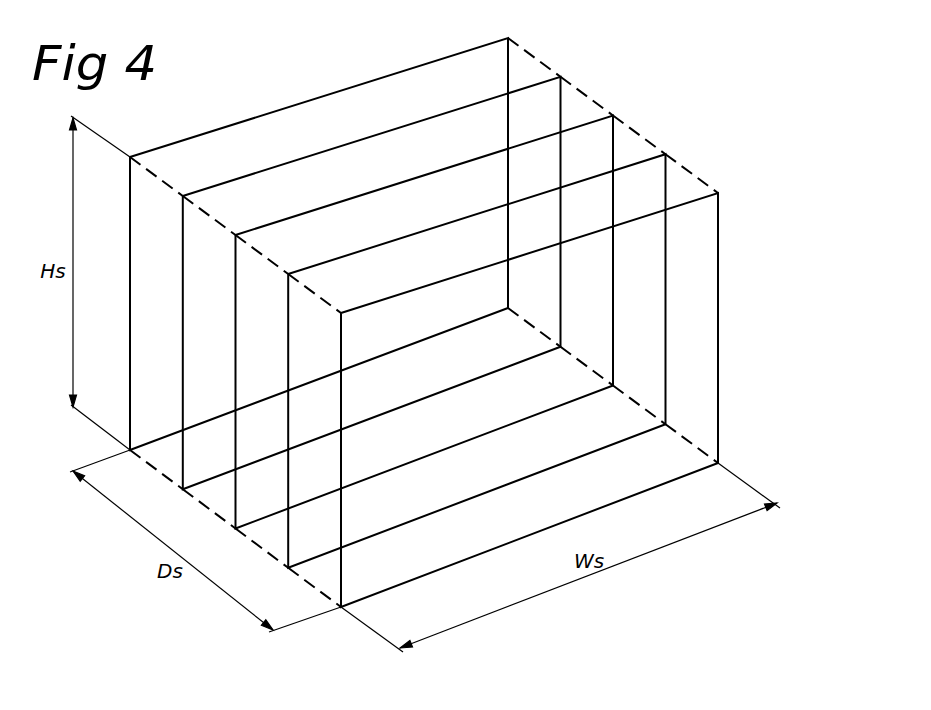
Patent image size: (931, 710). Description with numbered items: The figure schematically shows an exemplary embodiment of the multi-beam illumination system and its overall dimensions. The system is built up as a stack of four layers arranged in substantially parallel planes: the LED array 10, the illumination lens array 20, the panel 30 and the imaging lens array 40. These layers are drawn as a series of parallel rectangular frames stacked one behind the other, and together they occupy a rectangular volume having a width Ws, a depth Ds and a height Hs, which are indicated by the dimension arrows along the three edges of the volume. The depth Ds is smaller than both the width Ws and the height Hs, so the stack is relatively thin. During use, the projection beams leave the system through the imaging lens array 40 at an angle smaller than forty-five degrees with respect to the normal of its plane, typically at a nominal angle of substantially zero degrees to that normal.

The LED array 10 is at (482, 85).
The illumination lens array 20 is at (533, 122).
The panel 30 is at (584, 162).
The imaging lens array 40 is at (639, 202).